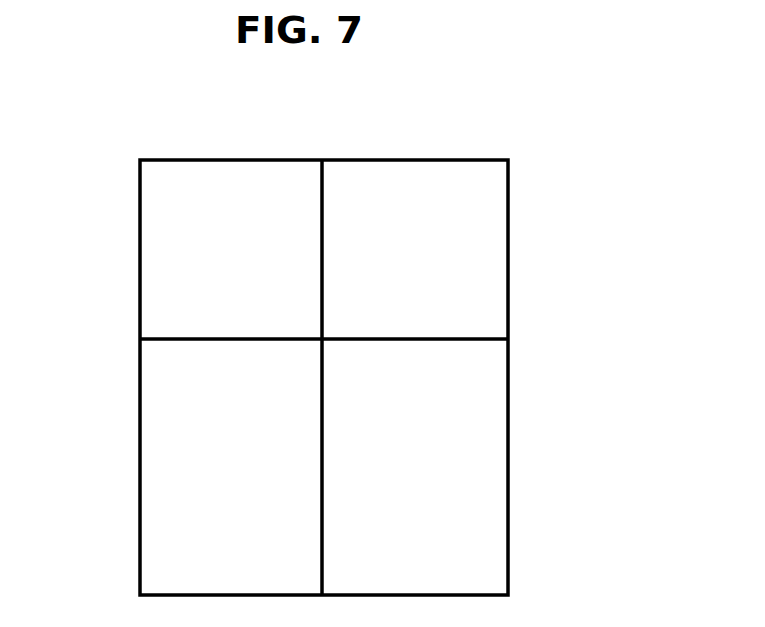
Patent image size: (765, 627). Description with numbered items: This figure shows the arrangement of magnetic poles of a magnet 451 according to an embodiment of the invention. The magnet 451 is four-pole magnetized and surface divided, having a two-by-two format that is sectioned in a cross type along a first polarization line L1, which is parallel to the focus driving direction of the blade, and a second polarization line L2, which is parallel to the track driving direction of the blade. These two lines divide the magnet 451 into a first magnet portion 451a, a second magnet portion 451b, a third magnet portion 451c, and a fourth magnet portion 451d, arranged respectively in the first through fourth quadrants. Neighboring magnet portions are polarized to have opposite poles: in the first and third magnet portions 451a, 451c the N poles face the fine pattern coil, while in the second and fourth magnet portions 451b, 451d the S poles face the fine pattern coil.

The magnet 451 is at (532, 245).
The first magnet portion 451a is at (487, 288).
The second magnet portion 451b is at (153, 280).
The third magnet portion 451c is at (155, 498).
The fourth magnet portion 451d is at (486, 508).
The first polarization line L1 is at (323, 187).
The second polarization line L2 is at (463, 341).